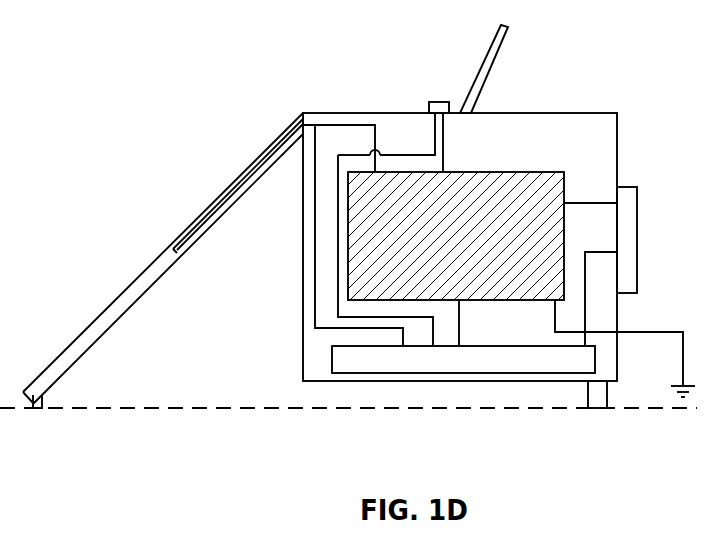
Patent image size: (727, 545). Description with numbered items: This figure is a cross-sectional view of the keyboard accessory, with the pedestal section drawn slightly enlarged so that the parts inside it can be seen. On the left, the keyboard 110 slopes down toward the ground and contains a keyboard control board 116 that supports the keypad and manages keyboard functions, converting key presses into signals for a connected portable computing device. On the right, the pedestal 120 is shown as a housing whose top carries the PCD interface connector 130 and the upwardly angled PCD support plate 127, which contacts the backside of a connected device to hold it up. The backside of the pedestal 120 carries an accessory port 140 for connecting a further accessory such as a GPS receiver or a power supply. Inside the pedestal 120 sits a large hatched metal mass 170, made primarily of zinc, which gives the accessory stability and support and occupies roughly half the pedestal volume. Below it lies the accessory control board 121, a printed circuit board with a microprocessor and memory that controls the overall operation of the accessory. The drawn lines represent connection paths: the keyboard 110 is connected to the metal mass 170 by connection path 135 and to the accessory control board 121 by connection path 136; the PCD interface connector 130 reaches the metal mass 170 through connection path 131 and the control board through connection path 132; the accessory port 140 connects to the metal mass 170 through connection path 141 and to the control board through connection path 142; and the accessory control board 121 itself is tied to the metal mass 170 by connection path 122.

The keyboard 110 is at (272, 144).
The keyboard control board 116 is at (186, 249).
The pedestal 120 is at (517, 113).
The accessory control board 121 is at (497, 346).
The connection path 122 is at (460, 338).
The PCD support plate 127 is at (504, 38).
The PCD interface connector 130 is at (433, 102).
The connection path 131 is at (443, 155).
The connection path 132 is at (435, 145).
The connection path 135 is at (362, 125).
The connection path 136 is at (340, 328).
The accessory port 140 is at (638, 253).
The connection path 141 is at (587, 203).
The connection path 142 is at (594, 252).
The metal mass 170 is at (348, 272).